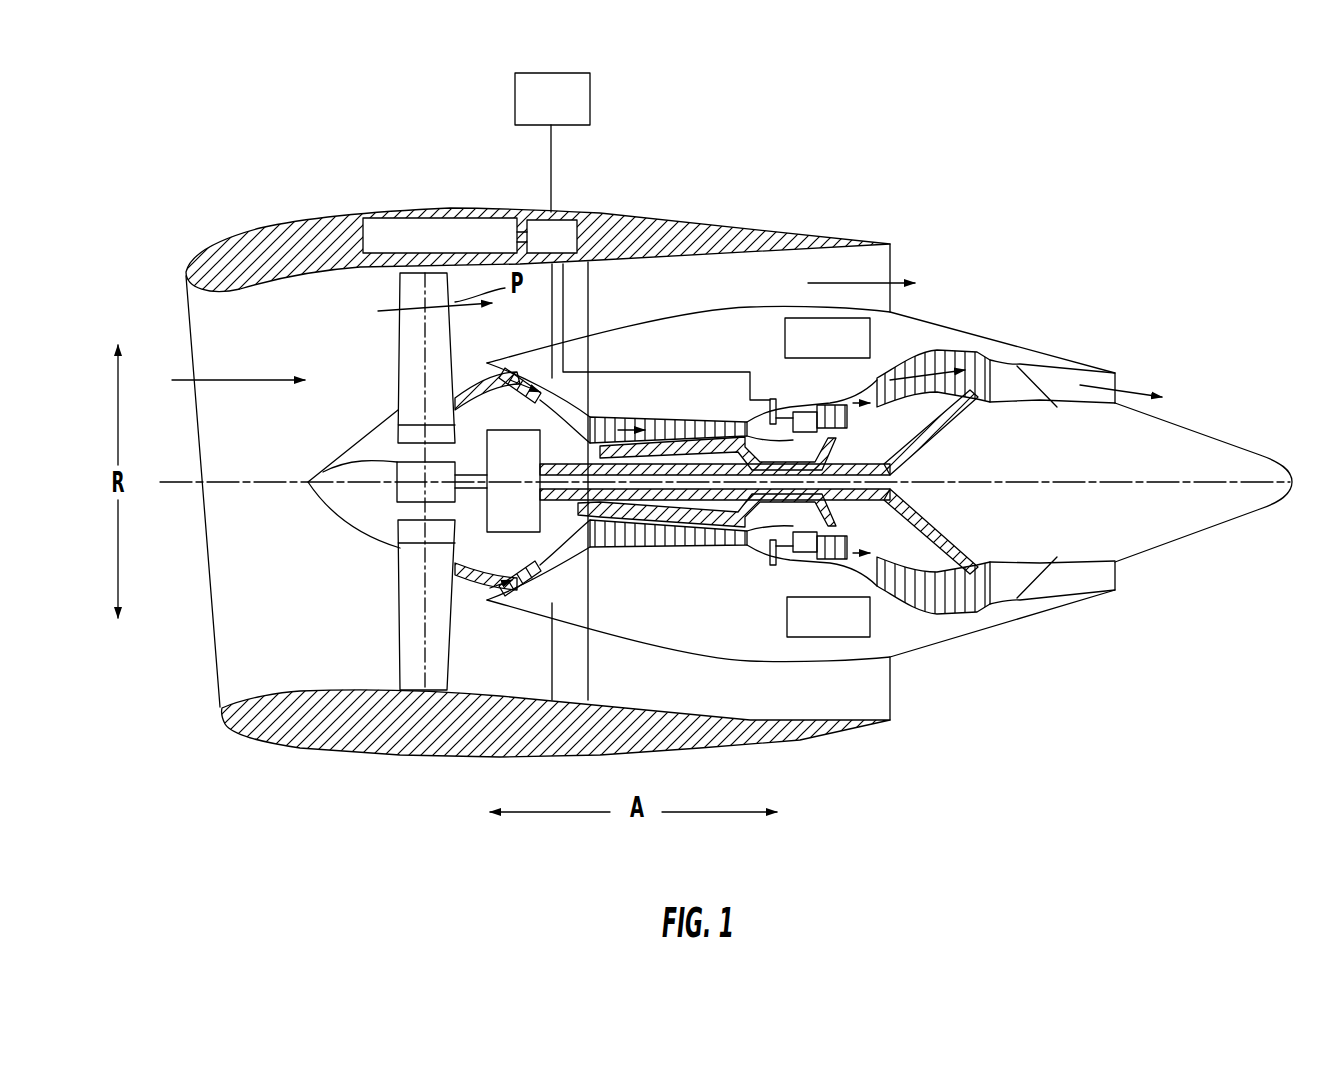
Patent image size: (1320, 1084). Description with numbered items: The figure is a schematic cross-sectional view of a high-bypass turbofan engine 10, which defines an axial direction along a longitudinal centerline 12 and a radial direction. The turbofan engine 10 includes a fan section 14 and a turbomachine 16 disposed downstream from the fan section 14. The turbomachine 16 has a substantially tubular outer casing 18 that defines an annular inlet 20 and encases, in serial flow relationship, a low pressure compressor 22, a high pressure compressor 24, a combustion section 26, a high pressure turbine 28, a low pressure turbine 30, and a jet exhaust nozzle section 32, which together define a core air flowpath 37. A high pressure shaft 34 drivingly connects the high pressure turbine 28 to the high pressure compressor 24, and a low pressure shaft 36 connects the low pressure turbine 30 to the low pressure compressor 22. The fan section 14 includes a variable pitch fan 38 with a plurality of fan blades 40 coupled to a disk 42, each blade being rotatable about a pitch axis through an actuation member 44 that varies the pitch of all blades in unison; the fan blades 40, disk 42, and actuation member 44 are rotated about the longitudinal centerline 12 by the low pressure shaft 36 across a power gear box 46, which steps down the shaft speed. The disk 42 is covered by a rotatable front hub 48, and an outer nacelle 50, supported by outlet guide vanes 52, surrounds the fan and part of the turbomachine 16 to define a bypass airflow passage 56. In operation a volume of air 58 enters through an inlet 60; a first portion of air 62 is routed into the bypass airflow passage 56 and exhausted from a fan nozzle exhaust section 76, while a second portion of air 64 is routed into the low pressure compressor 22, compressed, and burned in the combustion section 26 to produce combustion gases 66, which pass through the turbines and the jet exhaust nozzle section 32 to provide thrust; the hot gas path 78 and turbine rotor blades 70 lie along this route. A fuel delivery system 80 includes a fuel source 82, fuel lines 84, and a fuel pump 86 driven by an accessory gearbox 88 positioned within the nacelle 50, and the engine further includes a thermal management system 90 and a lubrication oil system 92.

The turbofan engine 10 is at (1034, 227).
The longitudinal centerline 12 is at (1058, 480).
The fan section 14 is at (356, 297).
The turbomachine 16 is at (720, 358).
The outer casing 18 is at (748, 645).
The annular inlet 20 is at (462, 590).
The low pressure compressor 22 is at (548, 556).
The high pressure compressor 24 is at (620, 545).
The combustion section 26 is at (790, 550).
The high pressure turbine 28 is at (905, 542).
The low pressure turbine 30 is at (975, 612).
The jet exhaust nozzle section 32 is at (1033, 594).
The high pressure shaft 34 is at (822, 436).
The low pressure shaft 36 is at (890, 458).
The core air flowpath 37 is at (566, 552).
The variable pitch fan 38 is at (360, 536).
The fan blades 40 is at (397, 630).
The disk 42 is at (418, 437).
The actuation member 44 is at (340, 456).
The power gear box 46 is at (530, 455).
The rotatable front hub 48 is at (320, 500).
The outer nacelle 50 is at (445, 757).
The outlet guide vanes 52 is at (595, 287).
The bypass airflow passage 56 is at (688, 308).
The volume of air 58 is at (246, 378).
The inlet 60 is at (230, 698).
The first portion of air 62 is at (412, 298).
The second portion of air 64 is at (483, 360).
The combustion gases 66 is at (934, 352).
The turbine rotor blades 70 is at (862, 530).
The fan nozzle exhaust section 76 is at (880, 270).
The hot gas path 78 is at (884, 382).
The fuel delivery system 80 is at (648, 128).
The fuel source 82 is at (562, 112).
The fuel lines 84 is at (554, 158).
The fuel pump 86 is at (568, 222).
The accessory gearbox 88 is at (428, 237).
The thermal management system 90 is at (795, 320).
The lubrication oil system 92 is at (825, 638).